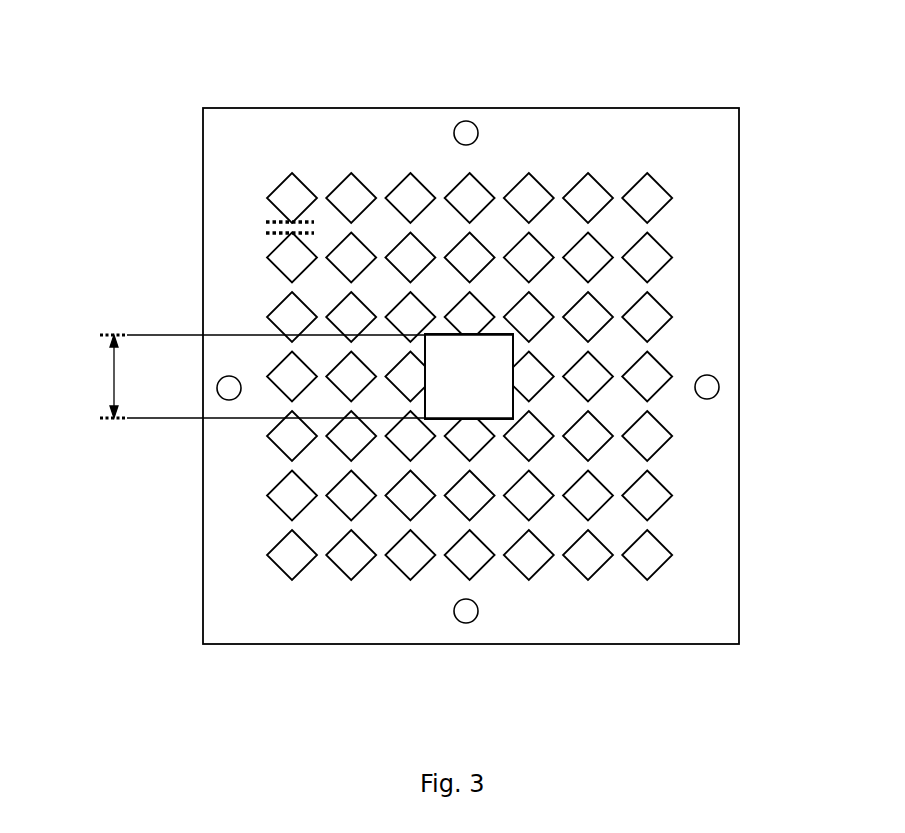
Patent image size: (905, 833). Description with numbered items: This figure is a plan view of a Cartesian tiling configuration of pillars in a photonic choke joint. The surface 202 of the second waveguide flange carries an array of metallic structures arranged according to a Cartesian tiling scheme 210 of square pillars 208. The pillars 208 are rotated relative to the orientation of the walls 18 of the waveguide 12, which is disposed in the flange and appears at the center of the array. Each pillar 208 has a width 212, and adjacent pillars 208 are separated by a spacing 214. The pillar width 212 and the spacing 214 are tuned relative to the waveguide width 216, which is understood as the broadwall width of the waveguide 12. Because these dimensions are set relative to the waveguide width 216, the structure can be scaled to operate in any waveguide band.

The surface 202 is at (705, 138).
The width 212 is at (640, 145).
The Cartesian tiling scheme 210 is at (550, 362).
The pillar 208 is at (665, 429).
The waveguide 12 is at (513, 403).
The wall 18 is at (425, 377).
The spacing 214 is at (257, 232).
The width 216 is at (100, 383).